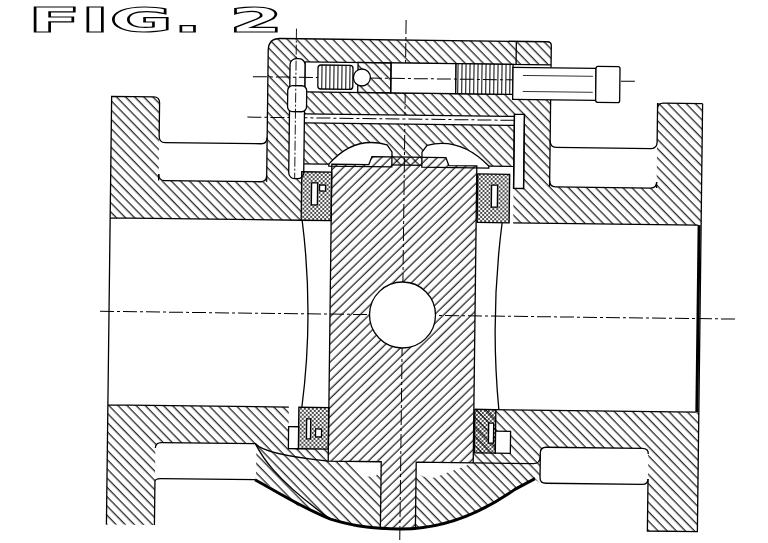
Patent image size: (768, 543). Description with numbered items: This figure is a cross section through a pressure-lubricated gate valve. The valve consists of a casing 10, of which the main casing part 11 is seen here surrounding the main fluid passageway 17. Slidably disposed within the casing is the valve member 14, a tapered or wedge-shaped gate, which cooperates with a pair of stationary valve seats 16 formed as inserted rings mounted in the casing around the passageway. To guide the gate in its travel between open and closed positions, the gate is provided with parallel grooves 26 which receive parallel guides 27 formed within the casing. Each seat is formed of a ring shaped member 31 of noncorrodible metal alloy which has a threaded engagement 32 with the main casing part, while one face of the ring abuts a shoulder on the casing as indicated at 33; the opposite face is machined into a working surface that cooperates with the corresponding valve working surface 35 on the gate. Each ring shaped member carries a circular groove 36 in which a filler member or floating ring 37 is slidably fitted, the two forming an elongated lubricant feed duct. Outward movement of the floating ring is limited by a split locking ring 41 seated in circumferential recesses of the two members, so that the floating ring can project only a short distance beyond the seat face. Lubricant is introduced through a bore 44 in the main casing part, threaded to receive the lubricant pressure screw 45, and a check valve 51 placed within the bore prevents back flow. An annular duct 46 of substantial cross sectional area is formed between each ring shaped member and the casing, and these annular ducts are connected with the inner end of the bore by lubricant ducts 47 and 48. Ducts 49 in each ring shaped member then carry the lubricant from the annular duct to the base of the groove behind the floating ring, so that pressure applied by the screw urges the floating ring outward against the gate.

The casing 10 is at (731, 132).
The main casing part 11 is at (680, 161).
The valve member 14 is at (459, 257).
The stationary valve seats 16 is at (286, 288).
The main fluid passageway 17 is at (689, 240).
The parallel grooves 26 is at (512, 167).
The parallel guides 27 is at (288, 170).
The ring shaped member 31 is at (505, 416).
The threaded engagement 32 is at (505, 465).
The shoulder abutting contact 33 is at (496, 344).
The valve working surface 35 is at (330, 341).
The groove 36 is at (298, 419).
The filler member or floating ring 37 is at (319, 433).
The split locking ring 41 is at (483, 439).
The bore 44 is at (419, 66).
The lubricant pressure screw 45 is at (565, 68).
The annular duct 46 is at (299, 191).
The lubricant duct 47 is at (262, 135).
The lubricant duct 48 is at (520, 136).
The ducts 49 is at (293, 205).
The check valve 51 is at (352, 66).